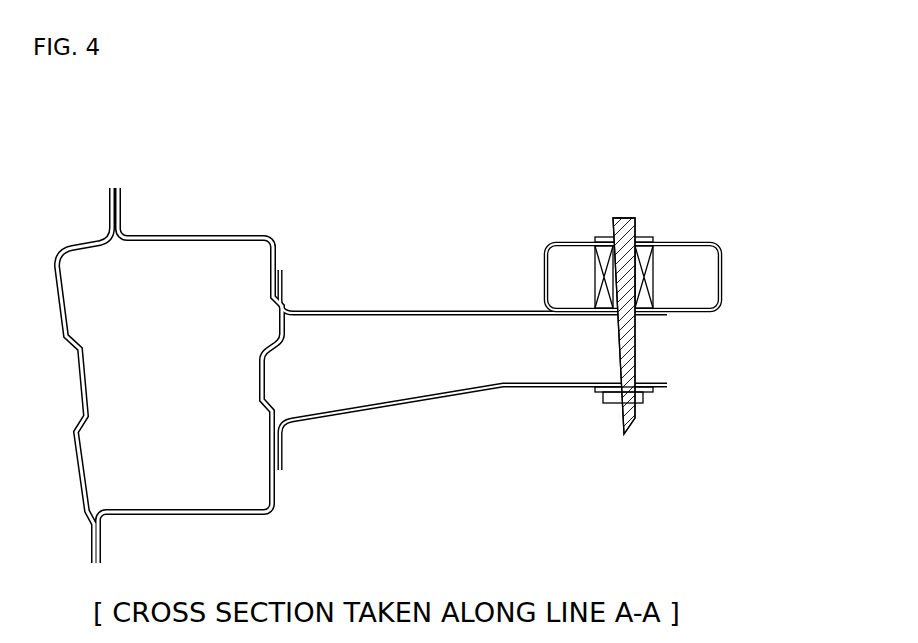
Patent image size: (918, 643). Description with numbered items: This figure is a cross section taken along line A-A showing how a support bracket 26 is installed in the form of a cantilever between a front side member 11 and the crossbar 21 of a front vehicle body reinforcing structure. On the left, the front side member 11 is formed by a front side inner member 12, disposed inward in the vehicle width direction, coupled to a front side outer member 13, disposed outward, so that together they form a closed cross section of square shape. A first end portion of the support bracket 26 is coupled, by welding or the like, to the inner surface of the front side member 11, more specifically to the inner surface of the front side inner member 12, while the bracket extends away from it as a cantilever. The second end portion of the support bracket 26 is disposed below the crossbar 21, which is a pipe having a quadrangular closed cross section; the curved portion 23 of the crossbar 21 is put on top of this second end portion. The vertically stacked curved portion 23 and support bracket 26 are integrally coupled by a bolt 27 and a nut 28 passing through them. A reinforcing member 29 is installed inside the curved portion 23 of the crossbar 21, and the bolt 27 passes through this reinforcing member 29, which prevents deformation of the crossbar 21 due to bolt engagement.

The front side member 11 is at (85, 123).
The front side inner member 12 is at (177, 237).
The front side outer member 13 is at (55, 278).
The support bracket 26 is at (335, 310).
The curved portion 23 is at (680, 242).
The crossbar 21 is at (633, 277).
The reinforcing member 29 is at (655, 277).
The bolt 27 is at (637, 354).
The nut 28 is at (645, 401).